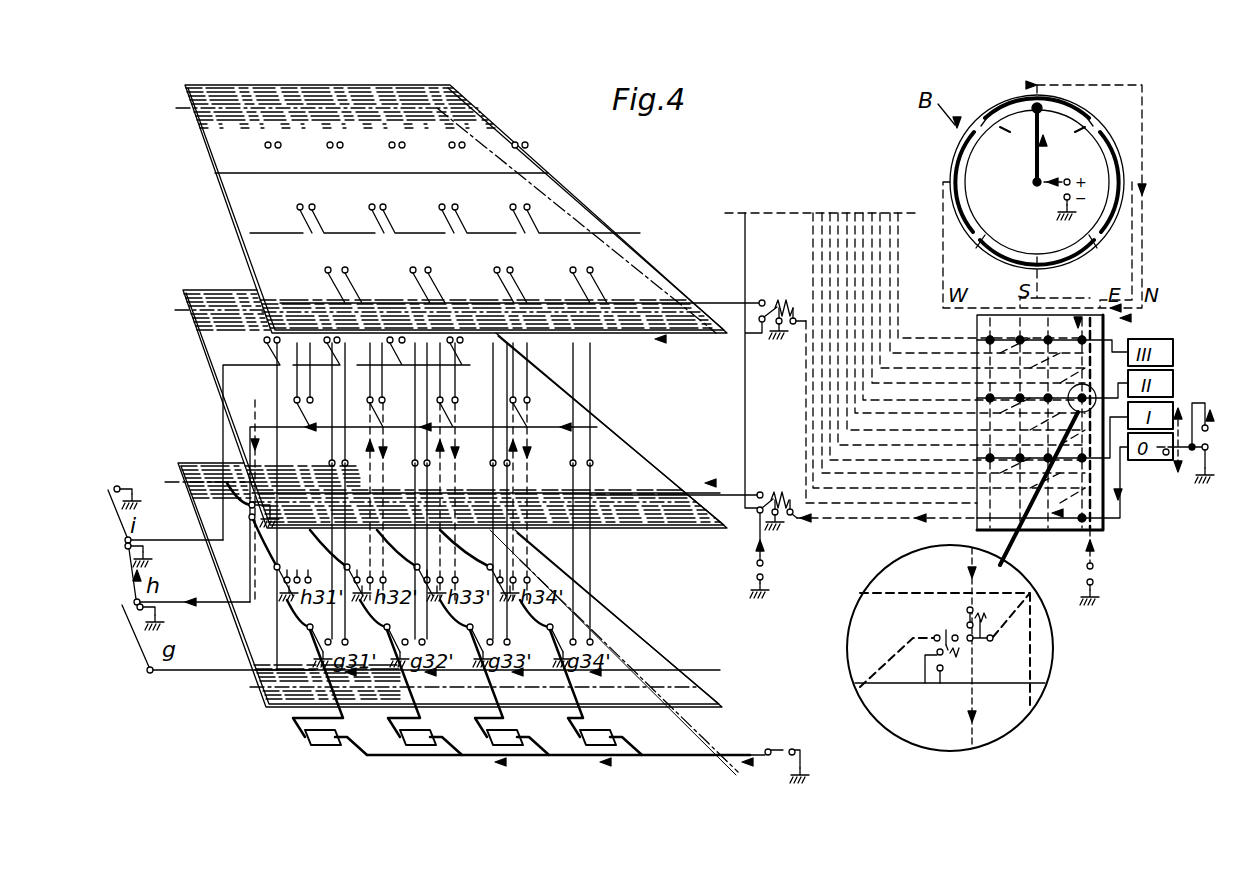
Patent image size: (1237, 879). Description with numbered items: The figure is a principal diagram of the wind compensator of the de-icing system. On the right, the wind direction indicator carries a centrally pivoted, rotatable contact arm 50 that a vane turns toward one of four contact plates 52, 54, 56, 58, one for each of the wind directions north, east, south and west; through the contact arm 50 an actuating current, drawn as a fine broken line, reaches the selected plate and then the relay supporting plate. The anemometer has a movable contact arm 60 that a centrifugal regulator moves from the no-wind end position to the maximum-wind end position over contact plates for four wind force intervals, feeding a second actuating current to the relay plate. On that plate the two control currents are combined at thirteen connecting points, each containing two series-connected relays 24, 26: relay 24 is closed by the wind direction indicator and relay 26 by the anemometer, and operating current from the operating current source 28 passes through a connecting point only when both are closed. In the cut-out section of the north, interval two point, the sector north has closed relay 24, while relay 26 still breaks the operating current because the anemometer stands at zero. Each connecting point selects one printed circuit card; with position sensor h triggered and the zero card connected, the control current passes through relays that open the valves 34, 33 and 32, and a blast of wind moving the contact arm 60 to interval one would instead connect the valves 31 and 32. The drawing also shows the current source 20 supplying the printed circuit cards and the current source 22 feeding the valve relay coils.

The power source / switch for second circuit board 20 is at (766, 577).
The power source for relay coils 22 is at (796, 758).
The relay 24 is at (958, 626).
The relay 26 is at (940, 681).
The operating current source 28 is at (1095, 582).
The valve 31 is at (317, 692).
The valve 32 is at (409, 692).
The valve 33 is at (503, 692).
The valve 34 is at (596, 692).
The contact arm 50 is at (1037, 163).
The contact plate 52 is at (1008, 112).
The contact plate 54 is at (1115, 150).
The contact plate 56 is at (1003, 254).
The contact plate 58 is at (966, 155).
The contact arm 60 is at (1163, 462).